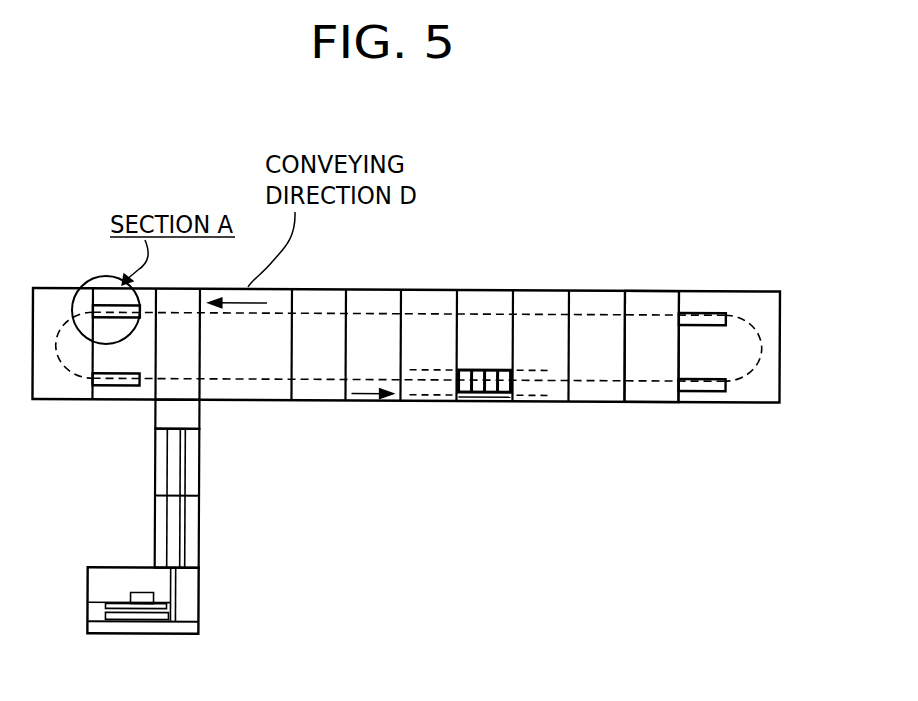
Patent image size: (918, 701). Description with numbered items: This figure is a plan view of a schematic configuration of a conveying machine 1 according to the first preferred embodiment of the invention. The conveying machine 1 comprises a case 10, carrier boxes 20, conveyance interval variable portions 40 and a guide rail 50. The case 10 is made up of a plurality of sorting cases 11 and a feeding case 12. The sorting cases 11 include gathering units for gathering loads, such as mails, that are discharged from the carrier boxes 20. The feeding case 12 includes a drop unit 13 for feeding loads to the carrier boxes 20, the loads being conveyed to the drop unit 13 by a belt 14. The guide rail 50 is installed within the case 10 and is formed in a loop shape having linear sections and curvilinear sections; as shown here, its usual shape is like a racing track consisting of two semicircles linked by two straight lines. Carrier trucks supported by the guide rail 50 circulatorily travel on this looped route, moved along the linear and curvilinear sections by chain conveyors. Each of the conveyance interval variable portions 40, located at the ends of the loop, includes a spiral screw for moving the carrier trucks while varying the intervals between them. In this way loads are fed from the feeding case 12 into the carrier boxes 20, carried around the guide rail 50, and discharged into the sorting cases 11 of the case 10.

The conveying machine 1 is at (452, 270).
The case 10 is at (647, 403).
The sorting case 11 is at (425, 403).
The feeding case 12 is at (200, 588).
The drop unit 13 is at (200, 412).
The belt 14 is at (160, 540).
The carrier box 20 is at (493, 403).
The conveyance interval variable portion 40 is at (707, 310).
The guide rail 50 is at (762, 345).